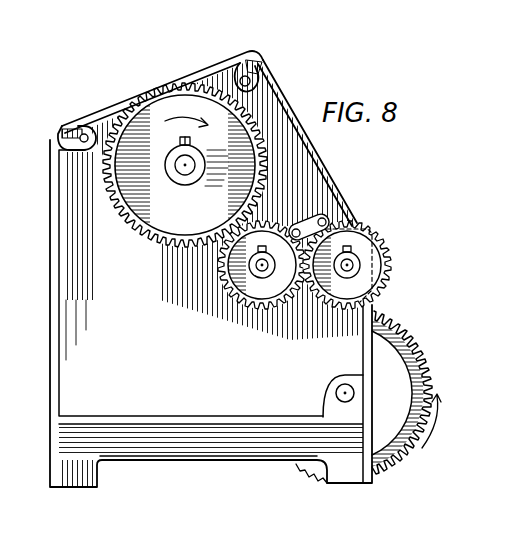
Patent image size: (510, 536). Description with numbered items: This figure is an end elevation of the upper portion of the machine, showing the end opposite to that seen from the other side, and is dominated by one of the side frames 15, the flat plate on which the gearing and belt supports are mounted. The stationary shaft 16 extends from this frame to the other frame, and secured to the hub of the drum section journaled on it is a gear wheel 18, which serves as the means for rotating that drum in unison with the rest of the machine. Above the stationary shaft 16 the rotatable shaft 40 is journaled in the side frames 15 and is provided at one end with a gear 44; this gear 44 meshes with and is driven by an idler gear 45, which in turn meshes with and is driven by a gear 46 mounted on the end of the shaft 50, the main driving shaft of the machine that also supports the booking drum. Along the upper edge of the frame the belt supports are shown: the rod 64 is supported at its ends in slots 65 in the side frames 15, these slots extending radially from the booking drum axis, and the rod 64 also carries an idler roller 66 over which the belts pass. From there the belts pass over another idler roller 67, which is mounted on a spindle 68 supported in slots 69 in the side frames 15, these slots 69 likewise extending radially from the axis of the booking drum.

The side frame 15 is at (67, 357).
The stationary shaft 16 is at (335, 393).
The gear wheel 18 is at (424, 362).
The rotatable shaft 40 is at (350, 263).
The gear 44 is at (389, 260).
The idler gear 45 is at (228, 290).
The gear 46 is at (144, 243).
The main driving shaft 50 is at (192, 161).
The rod 64 is at (274, 70).
The slot 65 is at (249, 57).
The idler roller 66 is at (251, 64).
The idler roller 67 is at (63, 133).
The spindle 68 is at (83, 143).
The slot 69 is at (67, 124).